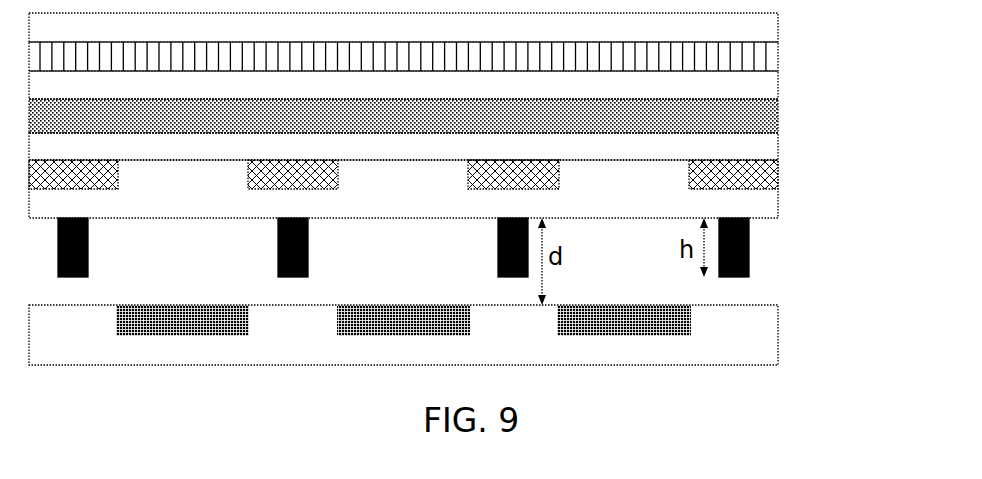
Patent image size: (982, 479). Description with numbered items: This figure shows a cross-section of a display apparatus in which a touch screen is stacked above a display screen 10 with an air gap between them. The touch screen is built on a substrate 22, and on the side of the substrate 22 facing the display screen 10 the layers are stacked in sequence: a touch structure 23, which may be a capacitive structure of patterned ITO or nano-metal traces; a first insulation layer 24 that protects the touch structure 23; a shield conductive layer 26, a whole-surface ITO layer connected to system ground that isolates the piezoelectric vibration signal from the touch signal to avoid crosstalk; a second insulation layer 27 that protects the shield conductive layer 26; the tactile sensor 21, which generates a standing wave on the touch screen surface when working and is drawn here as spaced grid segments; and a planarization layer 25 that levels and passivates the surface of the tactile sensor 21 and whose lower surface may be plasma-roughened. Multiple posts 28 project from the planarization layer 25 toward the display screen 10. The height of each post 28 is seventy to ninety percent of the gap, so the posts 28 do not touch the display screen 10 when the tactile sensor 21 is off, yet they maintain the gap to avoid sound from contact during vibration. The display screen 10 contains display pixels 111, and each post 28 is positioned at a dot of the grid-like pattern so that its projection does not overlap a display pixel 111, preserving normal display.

The display screen 10 is at (778, 351).
The display pixel 111 is at (691, 319).
The tactile sensor 21 is at (778, 173).
The substrate 22 is at (778, 28).
The touch structure 23 is at (778, 57).
The first insulation layer 24 is at (778, 86).
The planarization layer 25 is at (778, 203).
The shield conductive layer 26 is at (778, 115).
The second insulation layer 27 is at (778, 145).
The post 28 is at (749, 248).